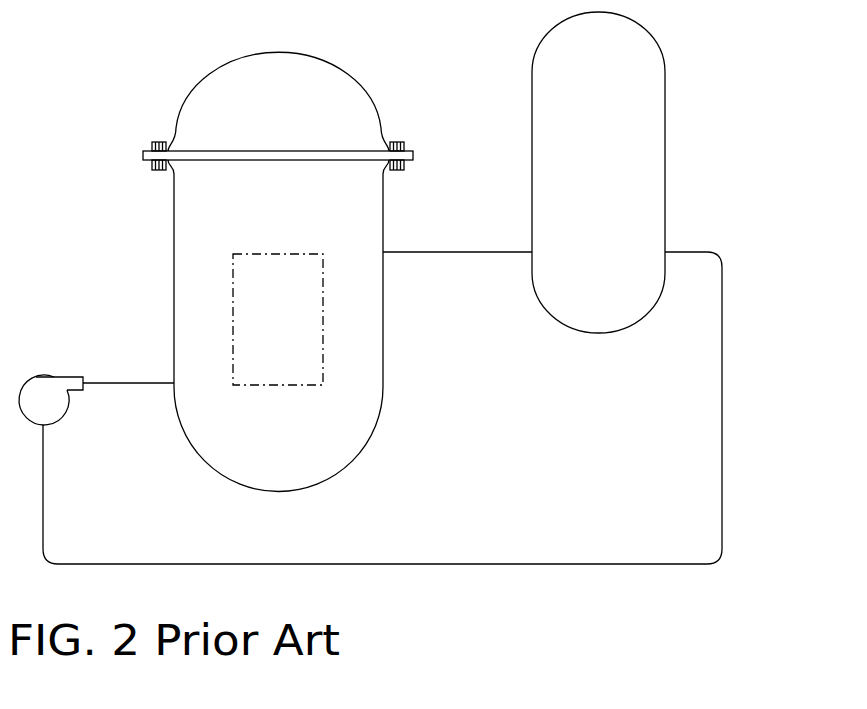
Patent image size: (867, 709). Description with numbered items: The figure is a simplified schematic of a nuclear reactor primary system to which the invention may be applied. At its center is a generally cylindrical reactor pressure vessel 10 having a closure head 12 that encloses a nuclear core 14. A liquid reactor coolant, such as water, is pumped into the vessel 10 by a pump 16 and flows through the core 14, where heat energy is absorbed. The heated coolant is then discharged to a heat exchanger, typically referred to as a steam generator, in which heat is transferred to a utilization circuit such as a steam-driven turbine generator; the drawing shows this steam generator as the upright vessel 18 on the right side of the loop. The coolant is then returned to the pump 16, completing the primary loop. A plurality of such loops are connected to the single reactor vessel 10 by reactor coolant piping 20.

The reactor pressure vessel 10 is at (293, 329).
The closure head 12 is at (185, 101).
The nuclear core 14 is at (233, 307).
The pump 16 is at (40, 377).
The accumulator tank 18 is at (666, 113).
The reactor coolant piping 20 is at (723, 497).